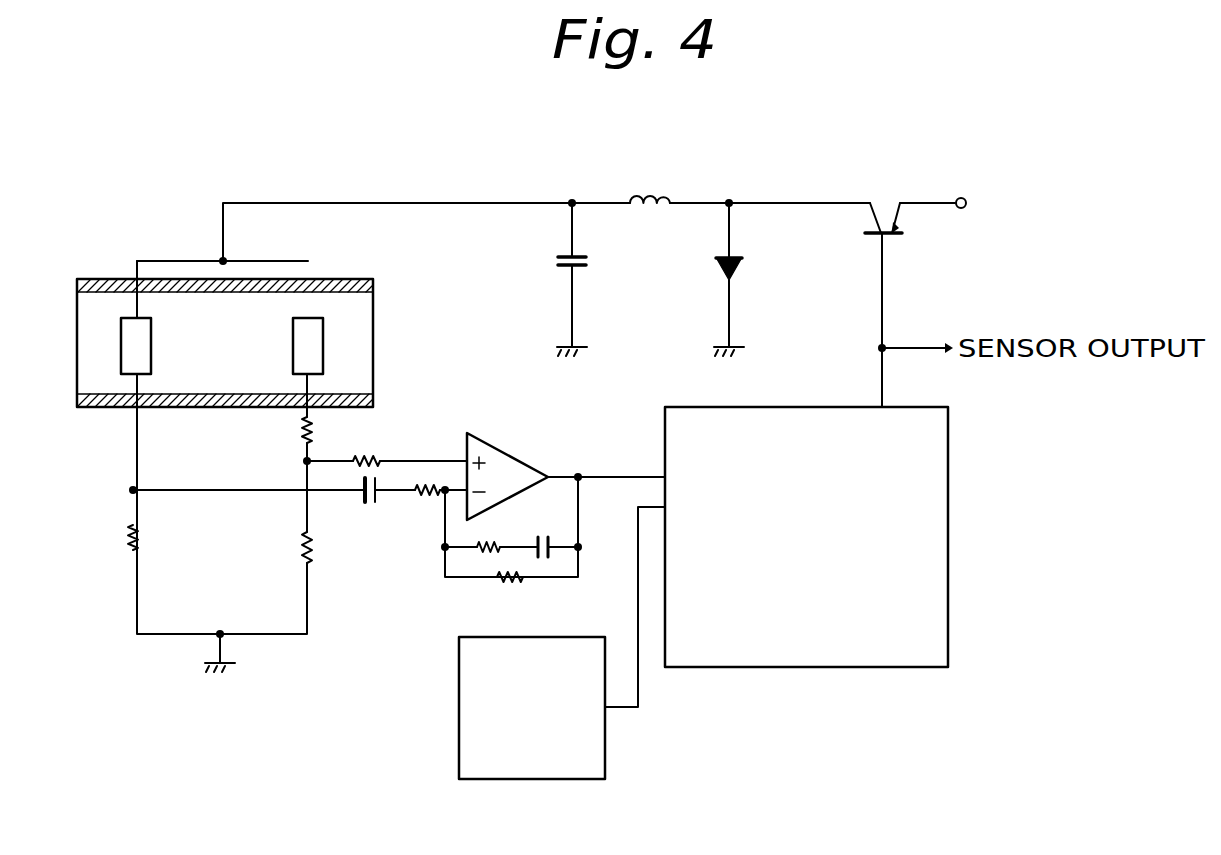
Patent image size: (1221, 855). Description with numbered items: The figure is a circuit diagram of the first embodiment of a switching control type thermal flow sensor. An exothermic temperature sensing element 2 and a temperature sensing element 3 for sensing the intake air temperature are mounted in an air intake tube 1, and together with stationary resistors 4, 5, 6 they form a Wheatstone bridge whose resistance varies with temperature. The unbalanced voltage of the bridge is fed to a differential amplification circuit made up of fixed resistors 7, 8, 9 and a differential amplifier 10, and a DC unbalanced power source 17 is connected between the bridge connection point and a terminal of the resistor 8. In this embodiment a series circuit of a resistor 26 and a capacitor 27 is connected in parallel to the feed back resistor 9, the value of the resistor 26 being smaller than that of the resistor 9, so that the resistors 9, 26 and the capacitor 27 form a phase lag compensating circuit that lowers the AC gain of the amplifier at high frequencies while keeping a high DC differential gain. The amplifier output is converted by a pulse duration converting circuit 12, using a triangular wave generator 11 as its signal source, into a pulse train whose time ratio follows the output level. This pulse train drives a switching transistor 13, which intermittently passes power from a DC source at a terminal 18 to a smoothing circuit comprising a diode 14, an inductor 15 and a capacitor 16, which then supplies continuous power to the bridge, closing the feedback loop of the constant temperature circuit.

The air intake tube 1 is at (349, 279).
The exothermic temperature sensing element 2 is at (121, 347).
The temperature sensing element 3 is at (323, 343).
The stationary resistor 4 is at (301, 441).
The stationary resistor 5 is at (298, 549).
The stationary resistor 6 is at (143, 538).
The fixed resistor 7 is at (370, 455).
The fixed resistor 8 is at (421, 497).
The feed back resistor 9 is at (500, 589).
The differential amplifier 10 is at (514, 451).
The triangular wave generator 11 is at (553, 781).
The pulse duration converting circuit 12 is at (949, 553).
The switching transistor 13 is at (892, 239).
The diode 14 is at (742, 266).
The inductor 15 is at (650, 193).
The capacitor 16 is at (588, 263).
The DC unbalanced power source 17 is at (365, 504).
The terminal 18 is at (966, 197).
The resistor 26 is at (497, 543).
The capacitor 27 is at (560, 523).